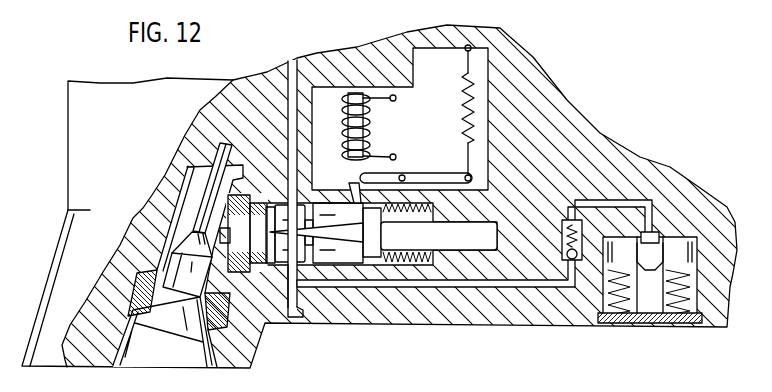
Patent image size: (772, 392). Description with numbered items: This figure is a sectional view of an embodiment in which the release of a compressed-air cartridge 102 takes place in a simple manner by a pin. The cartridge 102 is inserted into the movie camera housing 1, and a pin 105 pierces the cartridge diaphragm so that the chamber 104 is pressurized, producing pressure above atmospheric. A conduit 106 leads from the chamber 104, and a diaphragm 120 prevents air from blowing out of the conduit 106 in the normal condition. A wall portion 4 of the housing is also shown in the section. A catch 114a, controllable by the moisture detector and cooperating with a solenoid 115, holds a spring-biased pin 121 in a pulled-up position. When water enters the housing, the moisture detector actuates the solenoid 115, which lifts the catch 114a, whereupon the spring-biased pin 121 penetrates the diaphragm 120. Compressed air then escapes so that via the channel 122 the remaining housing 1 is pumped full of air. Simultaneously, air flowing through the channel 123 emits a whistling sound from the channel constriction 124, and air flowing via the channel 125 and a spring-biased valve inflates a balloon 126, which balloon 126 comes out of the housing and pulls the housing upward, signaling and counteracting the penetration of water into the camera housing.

The movie camera housing 1 is at (618, 142).
The housing wall 4 is at (43, 285).
The compressed-air cartridge 102 is at (158, 362).
The chamber 104 is at (175, 240).
The pin 105 is at (203, 228).
The conduit 106 is at (231, 194).
The catch 114a is at (356, 185).
The solenoid 115 is at (362, 118).
The diaphragm 120 is at (200, 213).
The spring-biased pin 121 is at (335, 232).
The channel 122 is at (292, 63).
The channel 123 is at (277, 313).
The channel constriction 124 is at (294, 312).
The channel 125 is at (413, 288).
The balloon 126 is at (648, 297).